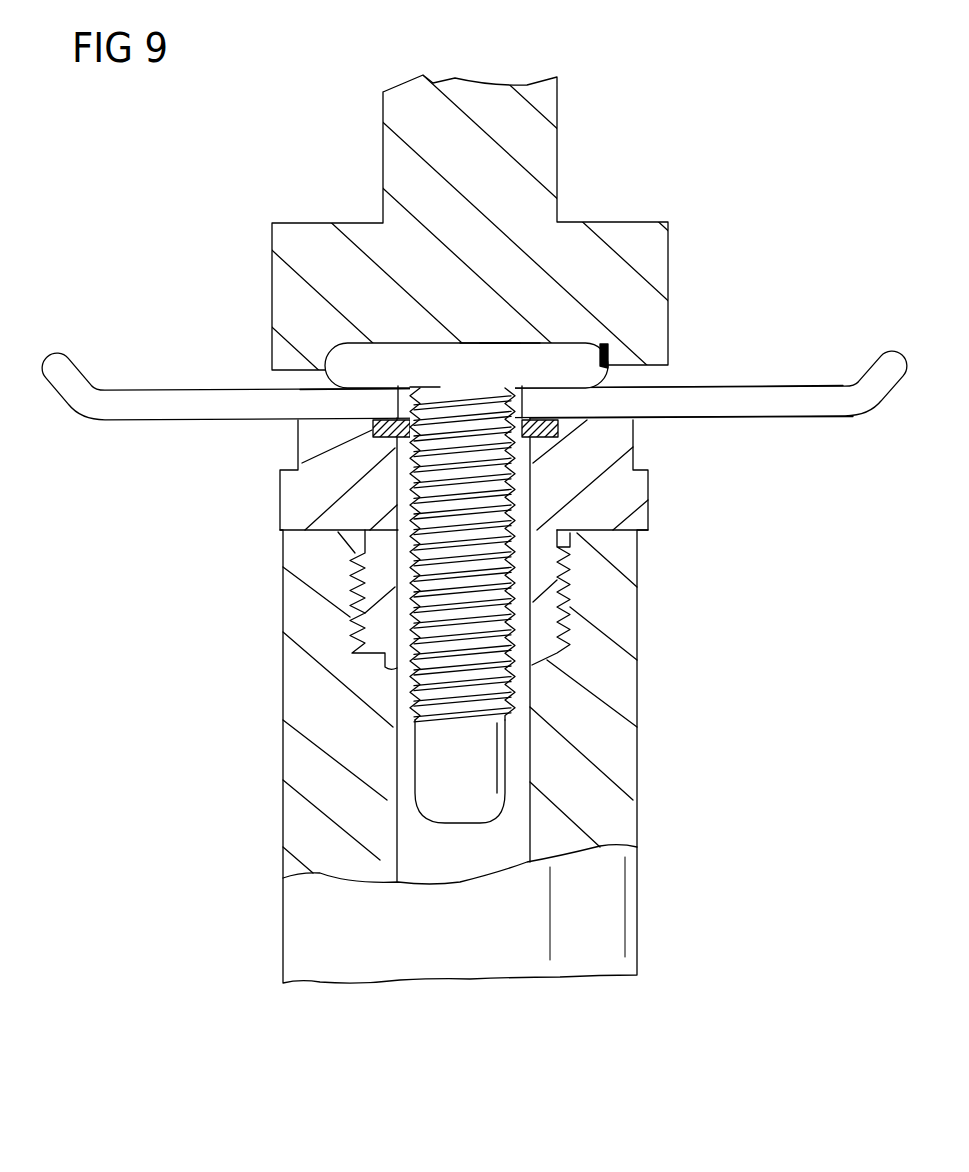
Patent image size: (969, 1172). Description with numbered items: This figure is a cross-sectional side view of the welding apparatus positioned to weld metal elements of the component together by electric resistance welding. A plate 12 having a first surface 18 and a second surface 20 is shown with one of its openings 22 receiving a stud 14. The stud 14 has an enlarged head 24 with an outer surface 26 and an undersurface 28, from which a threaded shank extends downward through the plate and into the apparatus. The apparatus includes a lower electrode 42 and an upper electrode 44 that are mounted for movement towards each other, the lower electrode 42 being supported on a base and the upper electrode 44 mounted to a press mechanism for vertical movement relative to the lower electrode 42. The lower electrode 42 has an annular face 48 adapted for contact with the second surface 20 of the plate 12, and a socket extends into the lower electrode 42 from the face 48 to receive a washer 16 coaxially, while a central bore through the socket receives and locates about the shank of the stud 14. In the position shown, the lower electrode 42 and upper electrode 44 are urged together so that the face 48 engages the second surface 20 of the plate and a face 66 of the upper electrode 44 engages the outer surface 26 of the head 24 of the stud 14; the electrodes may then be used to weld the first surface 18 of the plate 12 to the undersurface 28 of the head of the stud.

The plate 12 is at (795, 377).
The stud 14 is at (480, 578).
The washer 16 is at (372, 433).
The first surface 18 is at (730, 382).
The second surface 20 is at (732, 420).
The openings 22 is at (367, 398).
The enlarged head 24 is at (357, 364).
The undersurface 28 is at (447, 372).
The outer surface 26 is at (478, 348).
The lower electrode 42 is at (262, 511).
The upper electrode 44 is at (252, 260).
The annular face 48 is at (600, 423).
The face 66 is at (508, 342).